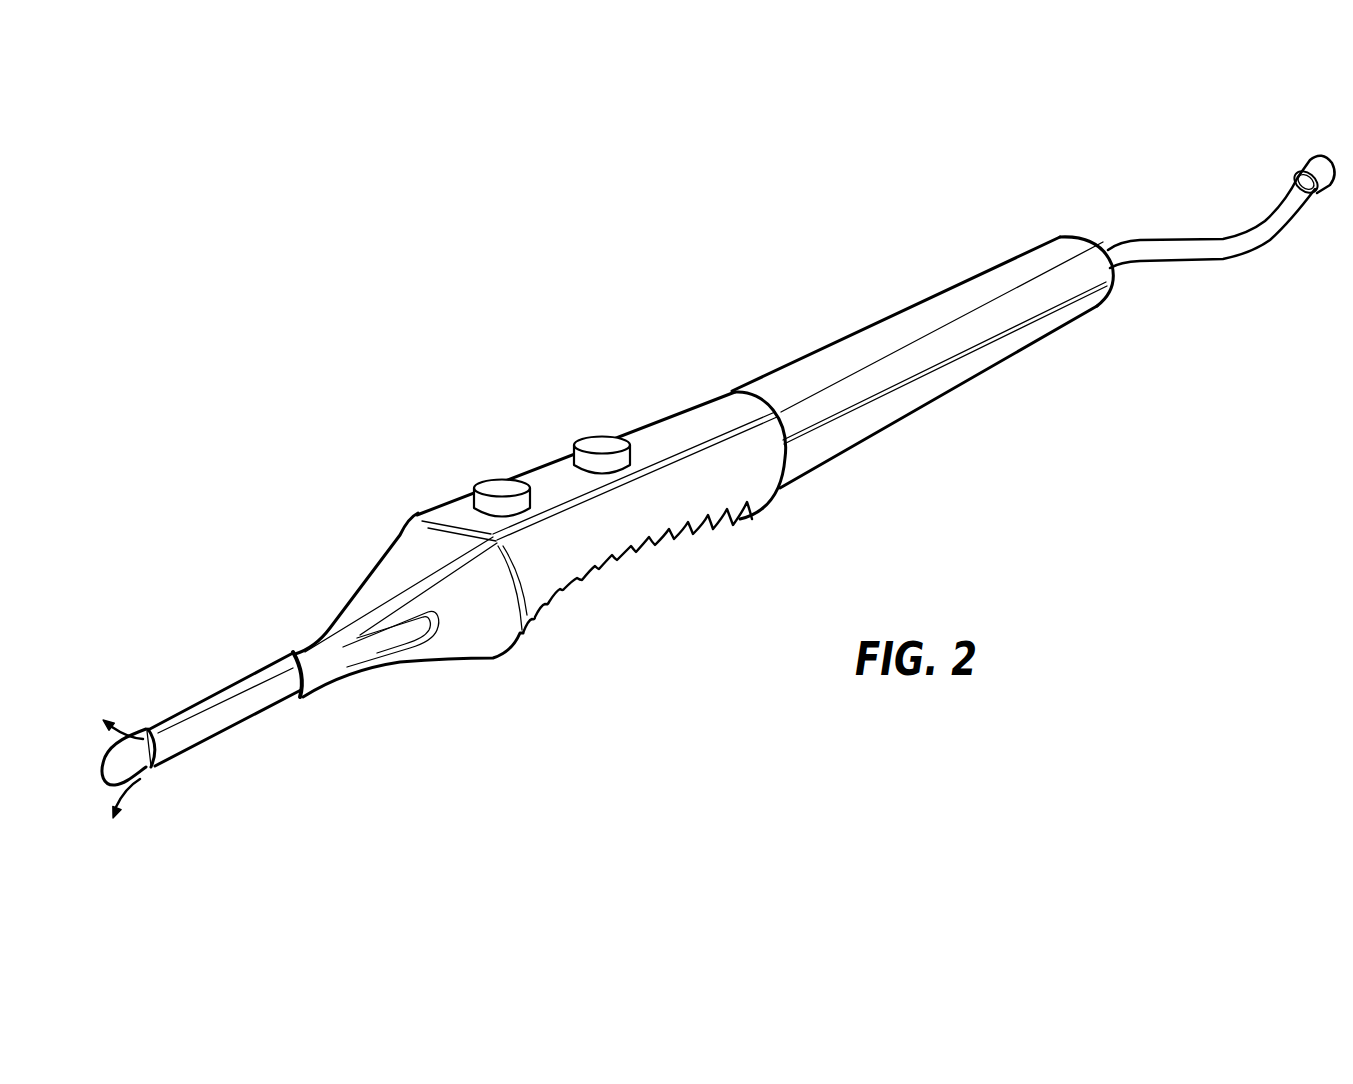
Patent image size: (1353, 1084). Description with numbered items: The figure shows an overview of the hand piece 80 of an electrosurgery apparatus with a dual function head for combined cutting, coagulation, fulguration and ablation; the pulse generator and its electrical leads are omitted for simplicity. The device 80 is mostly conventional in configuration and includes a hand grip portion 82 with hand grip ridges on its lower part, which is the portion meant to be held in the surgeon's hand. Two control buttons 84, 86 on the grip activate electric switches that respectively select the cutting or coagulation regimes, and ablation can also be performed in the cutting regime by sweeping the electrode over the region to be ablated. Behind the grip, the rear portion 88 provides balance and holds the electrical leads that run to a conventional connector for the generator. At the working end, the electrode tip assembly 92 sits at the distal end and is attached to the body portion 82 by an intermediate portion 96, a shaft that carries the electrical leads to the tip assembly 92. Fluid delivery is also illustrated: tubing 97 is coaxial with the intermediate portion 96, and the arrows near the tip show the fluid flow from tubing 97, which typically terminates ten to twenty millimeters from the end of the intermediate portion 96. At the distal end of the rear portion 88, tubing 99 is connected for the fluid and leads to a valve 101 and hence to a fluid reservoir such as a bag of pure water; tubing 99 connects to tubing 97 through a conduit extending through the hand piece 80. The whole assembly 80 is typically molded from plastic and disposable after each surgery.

The hand piece 80 is at (386, 324).
The hand grip portion 82 is at (712, 395).
The control button 84 is at (498, 490).
The control button 86 is at (598, 445).
The rear portion 88 is at (883, 418).
The electrode tip assembly 92 is at (115, 762).
The intermediate portion 96 is at (227, 693).
The tubing 97 is at (242, 723).
The tubing 99 is at (1250, 237).
The valve 101 is at (1318, 165).